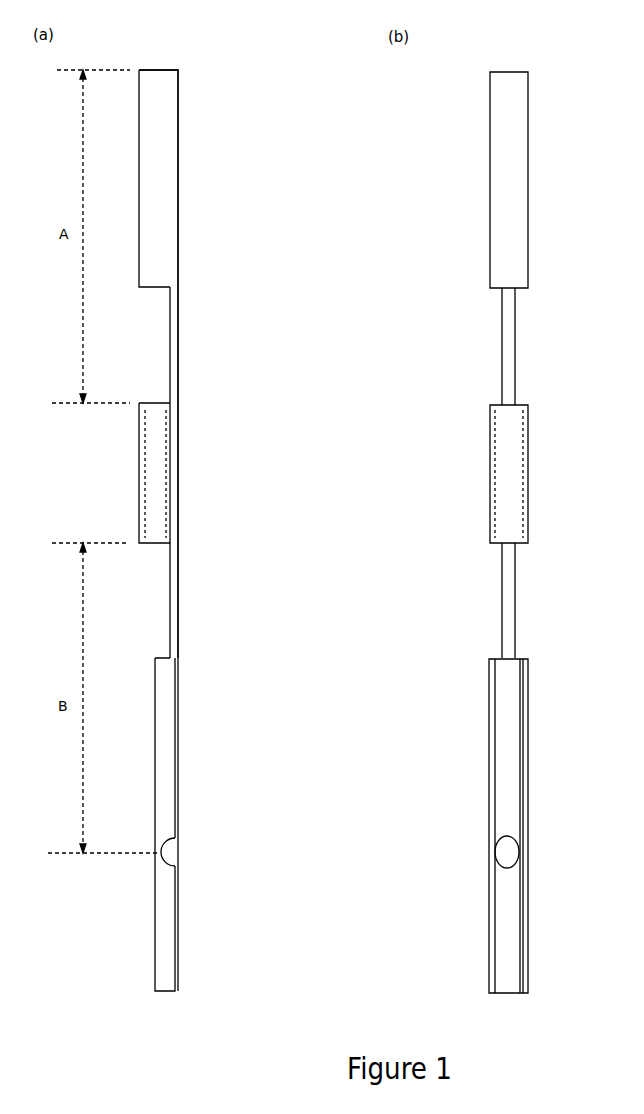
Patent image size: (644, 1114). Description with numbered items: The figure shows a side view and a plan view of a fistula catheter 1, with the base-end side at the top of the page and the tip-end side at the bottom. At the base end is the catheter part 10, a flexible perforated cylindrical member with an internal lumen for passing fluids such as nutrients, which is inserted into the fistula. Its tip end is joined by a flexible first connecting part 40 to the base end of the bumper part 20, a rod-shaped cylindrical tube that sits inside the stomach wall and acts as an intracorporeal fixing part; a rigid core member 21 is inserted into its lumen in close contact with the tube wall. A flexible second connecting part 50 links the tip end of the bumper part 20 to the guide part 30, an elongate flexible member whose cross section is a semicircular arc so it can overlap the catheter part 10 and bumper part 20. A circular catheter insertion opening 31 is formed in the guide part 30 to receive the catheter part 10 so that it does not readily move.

The fistula catheter 1 is at (188, 101).
The catheter part 10 is at (176, 215).
The bumper part 20 is at (162, 463).
The core member 21 is at (176, 492).
The guide part 30 is at (168, 727).
The catheter insertion opening 31 is at (170, 852).
The first connecting part 40 is at (178, 343).
The second connecting part 50 is at (178, 617).